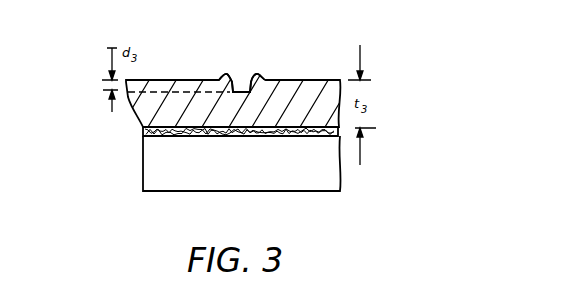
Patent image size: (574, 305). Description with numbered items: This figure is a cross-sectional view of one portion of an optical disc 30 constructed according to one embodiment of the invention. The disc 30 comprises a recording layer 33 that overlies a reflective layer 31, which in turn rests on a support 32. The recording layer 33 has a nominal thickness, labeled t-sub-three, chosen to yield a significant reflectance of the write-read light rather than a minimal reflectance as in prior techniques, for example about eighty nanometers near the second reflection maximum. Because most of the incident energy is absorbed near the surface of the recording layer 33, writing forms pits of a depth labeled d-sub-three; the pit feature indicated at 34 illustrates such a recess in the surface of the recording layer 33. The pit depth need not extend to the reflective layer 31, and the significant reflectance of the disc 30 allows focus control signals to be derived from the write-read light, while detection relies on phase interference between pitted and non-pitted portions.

The disc 30 is at (257, 118).
The reflective layer 31 is at (144, 132).
The support 32 is at (157, 169).
The recording layer 33 is at (303, 80).
The groove 34 is at (243, 75).